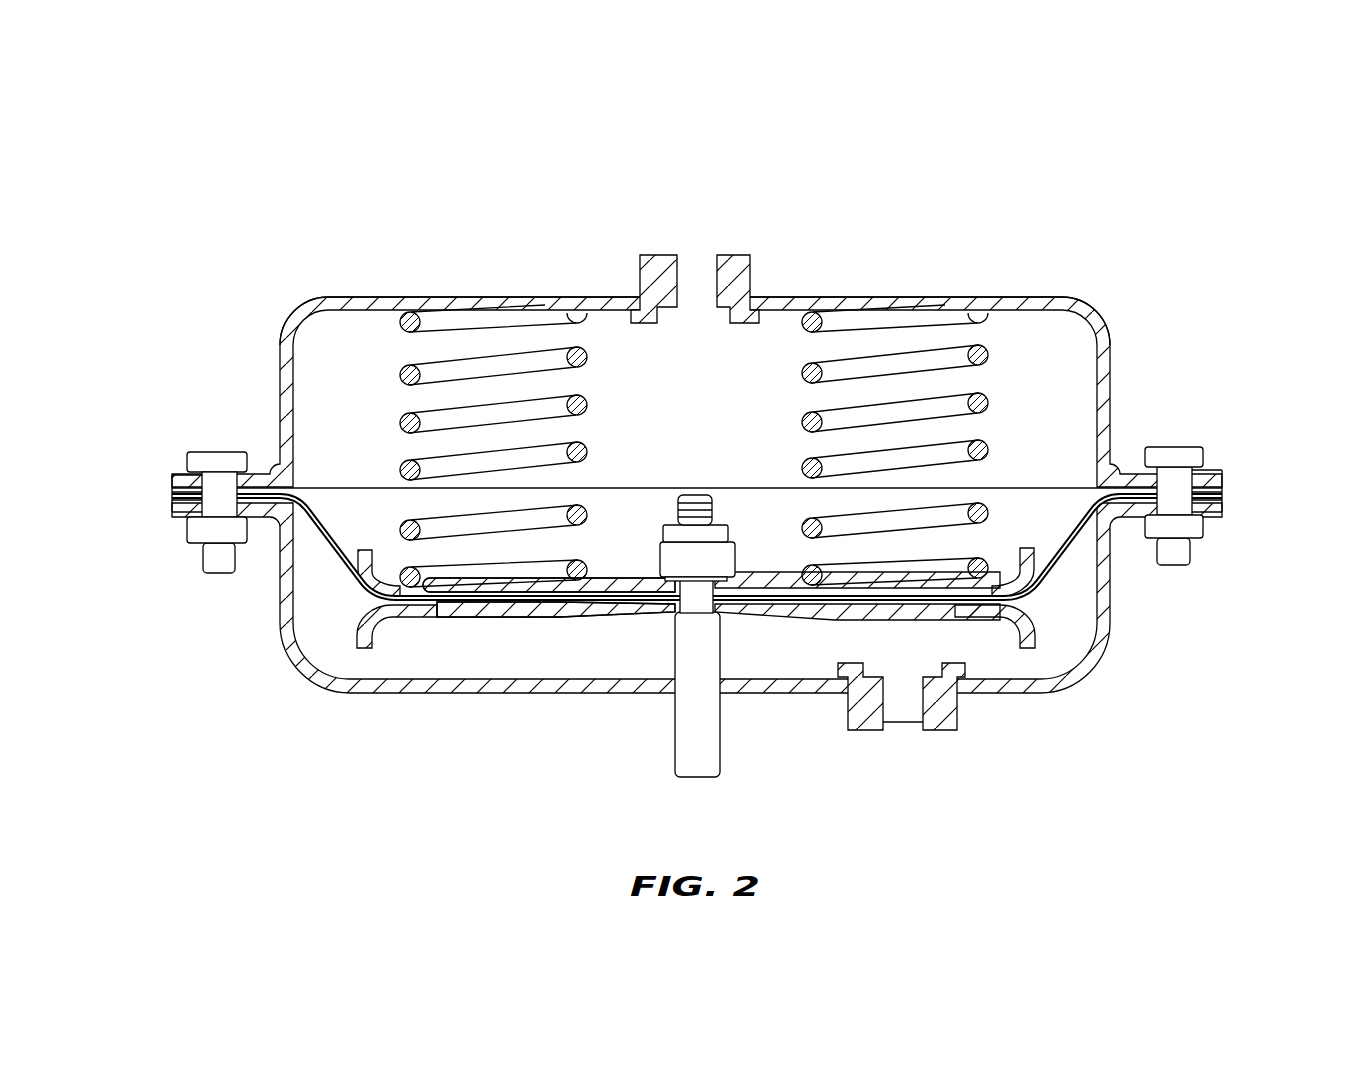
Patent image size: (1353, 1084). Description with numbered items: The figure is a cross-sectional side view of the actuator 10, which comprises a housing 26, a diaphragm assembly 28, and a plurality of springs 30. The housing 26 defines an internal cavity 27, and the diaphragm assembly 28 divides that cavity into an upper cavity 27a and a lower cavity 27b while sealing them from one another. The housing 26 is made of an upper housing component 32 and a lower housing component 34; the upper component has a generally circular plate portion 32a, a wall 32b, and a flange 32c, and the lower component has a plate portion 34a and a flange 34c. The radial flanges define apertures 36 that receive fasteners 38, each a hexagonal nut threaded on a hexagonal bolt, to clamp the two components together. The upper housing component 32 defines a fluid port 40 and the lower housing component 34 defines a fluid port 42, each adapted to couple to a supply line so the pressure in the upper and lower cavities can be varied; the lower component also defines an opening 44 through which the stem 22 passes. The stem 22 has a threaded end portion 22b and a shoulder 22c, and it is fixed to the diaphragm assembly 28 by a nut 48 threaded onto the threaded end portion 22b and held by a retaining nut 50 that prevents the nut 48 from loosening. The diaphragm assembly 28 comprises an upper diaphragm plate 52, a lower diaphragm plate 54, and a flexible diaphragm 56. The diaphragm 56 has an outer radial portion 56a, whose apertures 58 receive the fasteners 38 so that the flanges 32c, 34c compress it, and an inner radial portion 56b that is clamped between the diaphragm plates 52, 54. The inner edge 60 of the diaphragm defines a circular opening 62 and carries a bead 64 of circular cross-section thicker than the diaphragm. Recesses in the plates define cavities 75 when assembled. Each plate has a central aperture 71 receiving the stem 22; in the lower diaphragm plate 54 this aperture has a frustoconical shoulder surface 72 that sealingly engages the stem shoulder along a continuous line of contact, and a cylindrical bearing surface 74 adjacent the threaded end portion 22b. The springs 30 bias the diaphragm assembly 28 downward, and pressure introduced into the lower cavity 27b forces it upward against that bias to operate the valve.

The actuator 10 is at (860, 222).
The stem 22 is at (661, 756).
The threaded end portion 22b is at (692, 495).
The shoulder 22c is at (716, 652).
The housing 26 is at (1104, 310).
The internal cavity 27 is at (607, 332).
The upper cavity 27a is at (352, 340).
The lower cavity 27b is at (330, 630).
The diaphragm assembly 28 is at (1108, 478).
The springs 30 is at (407, 312).
The upper housing component 32 is at (1044, 278).
The plate portion 32a is at (980, 312).
The wall 32b is at (1112, 462).
The flange 32c is at (1222, 474).
The lower housing component 34 is at (1086, 690).
The plate portion 34a is at (1005, 694).
The flange 34c is at (1222, 510).
The apertures 36 is at (219, 452).
The fasteners 38 is at (220, 575).
The fluid port 40 is at (742, 256).
The fluid port 42 is at (940, 732).
The opening 44 is at (735, 693).
The nut 48 is at (714, 542).
The retaining nut 50 is at (668, 528).
The upper diaphragm plate 52 is at (898, 548).
The lower diaphragm plate 54 is at (565, 640).
The diaphragm 56 is at (318, 573).
The outer radial portion 56a is at (172, 492).
The inner radial portion 56b is at (330, 556).
The apertures 58 is at (212, 452).
The inner edge 60 is at (470, 600).
The opening 62 is at (470, 600).
The bead 64 is at (430, 596).
The central aperture 71 is at (722, 550).
The shoulder surface 72 is at (676, 700).
The bearing surface 74 is at (662, 532).
The cavities 75 is at (505, 606).